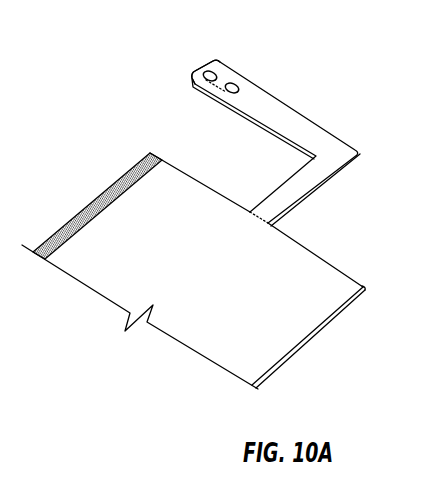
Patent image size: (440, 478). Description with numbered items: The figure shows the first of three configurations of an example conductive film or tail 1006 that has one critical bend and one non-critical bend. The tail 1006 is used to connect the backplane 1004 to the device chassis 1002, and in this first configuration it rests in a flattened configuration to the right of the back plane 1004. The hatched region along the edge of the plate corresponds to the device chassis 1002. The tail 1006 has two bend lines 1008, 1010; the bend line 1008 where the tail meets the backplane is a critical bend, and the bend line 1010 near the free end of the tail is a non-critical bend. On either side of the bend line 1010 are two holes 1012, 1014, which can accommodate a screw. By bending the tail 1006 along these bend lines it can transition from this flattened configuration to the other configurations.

The device chassis 1002 is at (108, 188).
The backplane 1004 is at (264, 318).
The tail 1006 is at (302, 115).
The bend line 1008 is at (247, 218).
The bend line 1010 is at (230, 77).
The hole 1012 is at (196, 73).
The hole 1014 is at (240, 83).